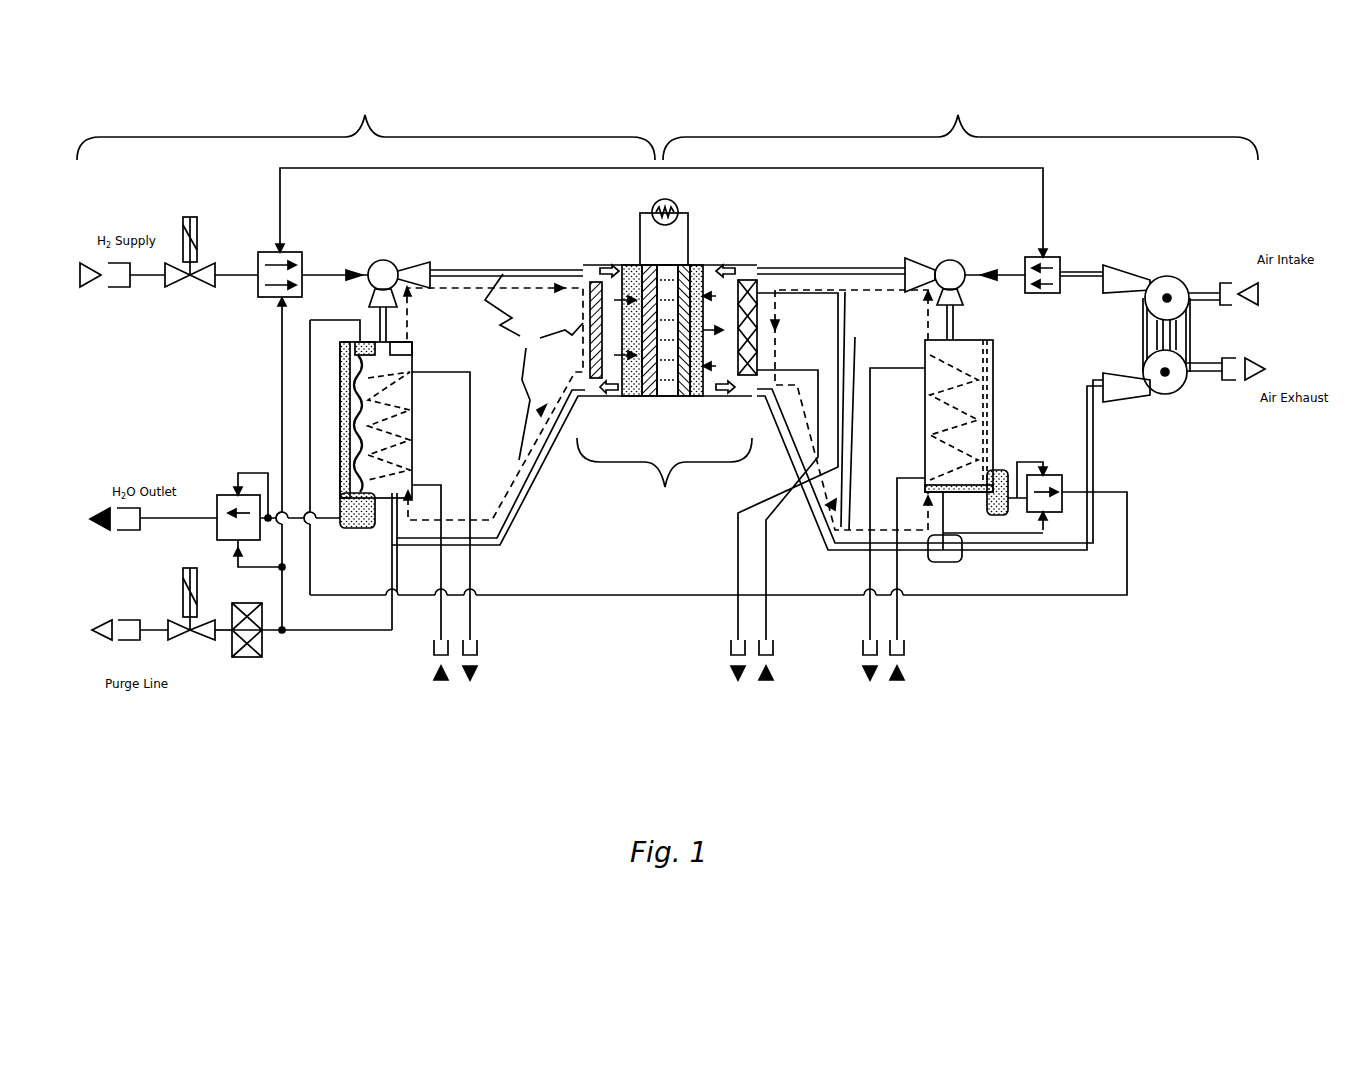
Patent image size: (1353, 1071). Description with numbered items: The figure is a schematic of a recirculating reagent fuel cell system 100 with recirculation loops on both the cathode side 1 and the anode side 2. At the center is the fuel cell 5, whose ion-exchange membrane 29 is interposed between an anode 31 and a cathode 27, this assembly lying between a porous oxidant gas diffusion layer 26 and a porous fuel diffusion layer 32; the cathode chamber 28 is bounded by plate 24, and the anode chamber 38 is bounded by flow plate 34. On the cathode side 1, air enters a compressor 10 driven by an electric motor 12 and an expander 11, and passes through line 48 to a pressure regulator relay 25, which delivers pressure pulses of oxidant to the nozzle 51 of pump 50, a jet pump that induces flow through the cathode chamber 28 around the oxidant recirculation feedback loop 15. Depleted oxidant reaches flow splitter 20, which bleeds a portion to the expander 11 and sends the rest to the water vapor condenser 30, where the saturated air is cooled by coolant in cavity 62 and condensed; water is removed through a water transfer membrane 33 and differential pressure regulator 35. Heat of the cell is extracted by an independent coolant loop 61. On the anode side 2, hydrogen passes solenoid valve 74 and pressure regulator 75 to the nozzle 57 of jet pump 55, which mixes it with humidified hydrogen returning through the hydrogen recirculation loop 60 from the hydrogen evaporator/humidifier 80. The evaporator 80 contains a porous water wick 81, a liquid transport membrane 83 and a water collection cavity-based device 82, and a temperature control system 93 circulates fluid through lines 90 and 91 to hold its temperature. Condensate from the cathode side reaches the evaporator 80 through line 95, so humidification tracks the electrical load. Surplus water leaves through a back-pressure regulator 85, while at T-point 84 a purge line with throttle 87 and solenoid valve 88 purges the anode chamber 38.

The cathode side 1 is at (960, 125).
The anode side 2 is at (366, 125).
The fuel cell 5 is at (645, 354).
The compressor 10 is at (1152, 270).
The expander 11 is at (1145, 394).
The electric motor 12 is at (1190, 348).
The oxidant recirculation feedback loop 15 is at (927, 312).
The flow splitter 20 is at (965, 556).
The plate 24 is at (765, 290).
The pressure regulator relay 25 is at (1056, 260).
The porous oxidant gas diffusion layer 26 is at (688, 272).
The cathode 27 is at (686, 396).
The cathode chamber 28 is at (748, 278).
The ion-exchange membrane 29 is at (670, 396).
The water vapor condenser 30 is at (977, 423).
The anode 31 is at (645, 396).
The porous fuel diffusion layer 32 is at (640, 275).
The water transfer membrane 33 is at (990, 430).
The flow plate 34 is at (590, 290).
The differential pressure regulator 35 is at (1045, 472).
The anode chamber 38 is at (606, 268).
The line 48 is at (1090, 272).
The pump 50 is at (952, 260).
The nozzle 51 is at (985, 270).
The pump 55 is at (387, 261).
The nozzle 57 is at (350, 270).
The hydrogen recirculation loop 60 is at (534, 367).
The coolant loop 61 is at (784, 503).
The coolant circulation cavity 62 is at (894, 540).
The solenoid valve 74 is at (186, 217).
The pressure regulator 75 is at (295, 252).
The hydrogen evaporator/humidifier 80 is at (380, 443).
The porous water wick 81 is at (352, 440).
The water collection cavity-based device 82 is at (368, 528).
The liquid transport membrane 83 is at (348, 378).
The T-point 84 is at (393, 548).
The back-pressure regulator 85 is at (222, 492).
The throttle 87 is at (266, 640).
The solenoid valve 88 is at (200, 635).
The line 90 is at (426, 488).
The line 91 is at (471, 412).
The temperature control system 93 is at (455, 676).
The line 95 is at (555, 597).
The recirculating reagent fuel cell system 100 is at (718, 784).